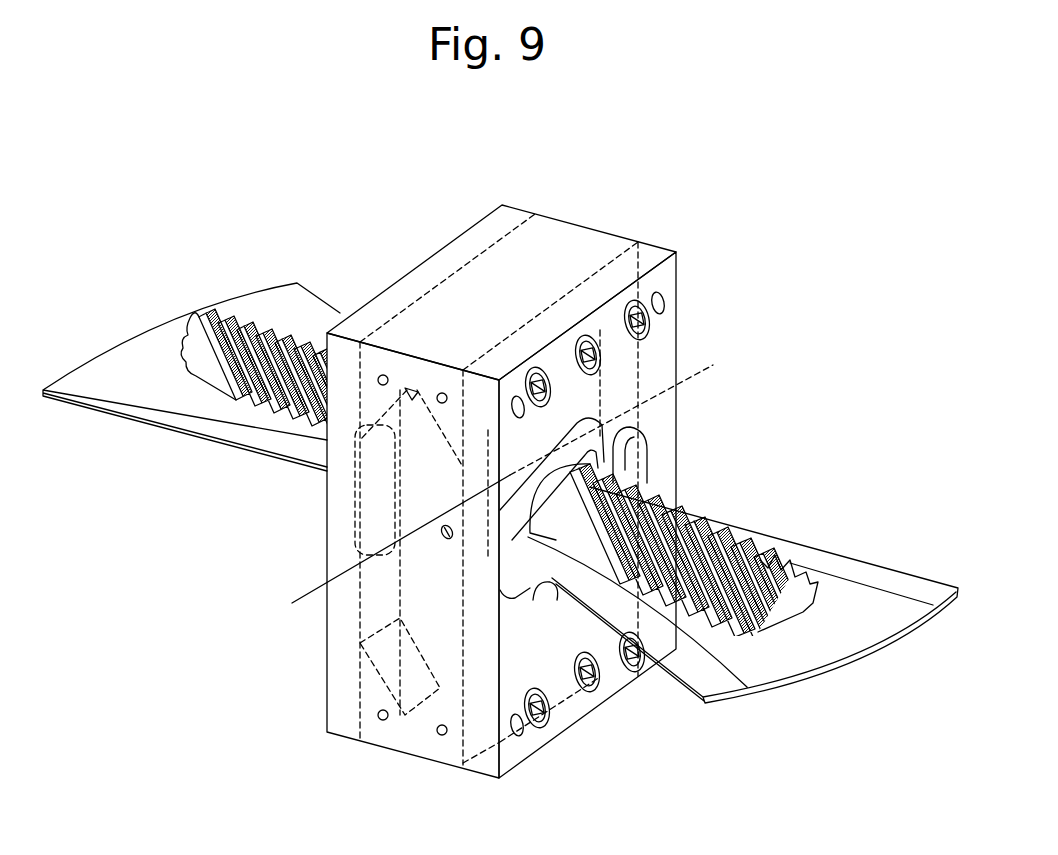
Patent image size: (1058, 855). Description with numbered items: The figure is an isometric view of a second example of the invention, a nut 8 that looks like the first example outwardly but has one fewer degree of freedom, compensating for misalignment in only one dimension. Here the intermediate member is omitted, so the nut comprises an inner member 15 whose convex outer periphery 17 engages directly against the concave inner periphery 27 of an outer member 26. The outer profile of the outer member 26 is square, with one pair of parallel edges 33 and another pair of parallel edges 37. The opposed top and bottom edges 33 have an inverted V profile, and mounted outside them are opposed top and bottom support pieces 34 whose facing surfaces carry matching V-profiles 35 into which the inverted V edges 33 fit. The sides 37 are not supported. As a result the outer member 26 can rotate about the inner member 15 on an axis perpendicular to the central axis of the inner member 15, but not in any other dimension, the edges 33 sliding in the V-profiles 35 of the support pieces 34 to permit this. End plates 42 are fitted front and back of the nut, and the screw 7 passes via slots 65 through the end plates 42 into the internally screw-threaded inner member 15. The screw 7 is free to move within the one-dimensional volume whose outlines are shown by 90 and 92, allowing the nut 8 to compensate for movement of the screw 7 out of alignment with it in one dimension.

The screw 7 is at (237, 313).
The nut 8 is at (757, 455).
The inner member 15 is at (597, 468).
The convex outer periphery 17 is at (627, 437).
The outer member 26 is at (383, 547).
The concave inner periphery 27 is at (629, 412).
The parallel edges 33 is at (403, 325).
The support pieces 34 is at (567, 222).
The V-profiles 35 is at (449, 285).
The parallel edges 37 is at (415, 481).
The end plates 42 is at (487, 222).
The slots 65 is at (393, 520).
The one dimensional volume outline 90 is at (853, 623).
The one dimensional volume outline 92 is at (145, 333).